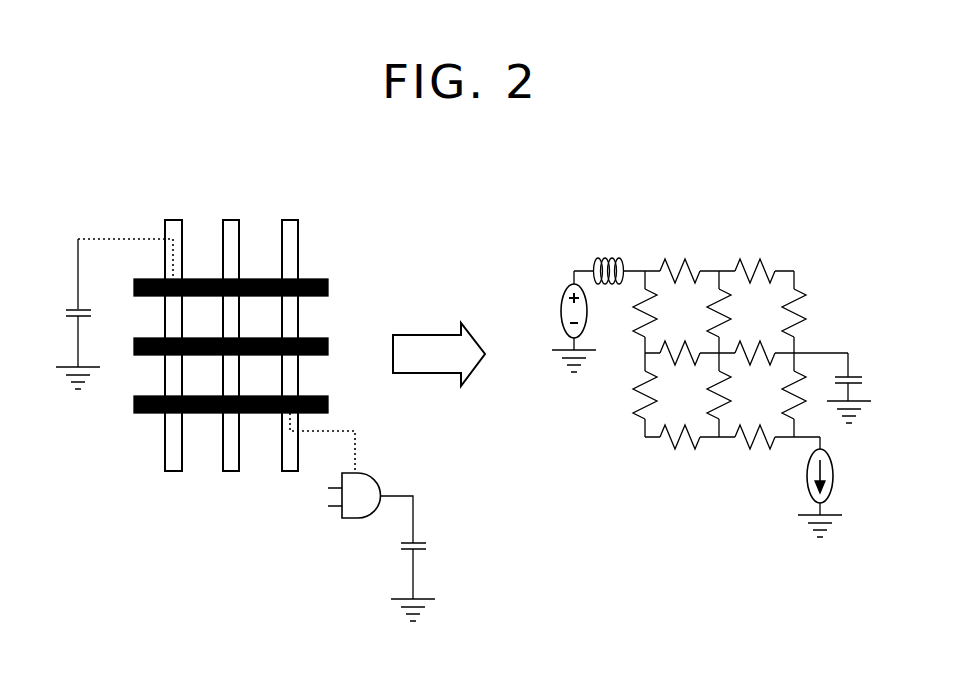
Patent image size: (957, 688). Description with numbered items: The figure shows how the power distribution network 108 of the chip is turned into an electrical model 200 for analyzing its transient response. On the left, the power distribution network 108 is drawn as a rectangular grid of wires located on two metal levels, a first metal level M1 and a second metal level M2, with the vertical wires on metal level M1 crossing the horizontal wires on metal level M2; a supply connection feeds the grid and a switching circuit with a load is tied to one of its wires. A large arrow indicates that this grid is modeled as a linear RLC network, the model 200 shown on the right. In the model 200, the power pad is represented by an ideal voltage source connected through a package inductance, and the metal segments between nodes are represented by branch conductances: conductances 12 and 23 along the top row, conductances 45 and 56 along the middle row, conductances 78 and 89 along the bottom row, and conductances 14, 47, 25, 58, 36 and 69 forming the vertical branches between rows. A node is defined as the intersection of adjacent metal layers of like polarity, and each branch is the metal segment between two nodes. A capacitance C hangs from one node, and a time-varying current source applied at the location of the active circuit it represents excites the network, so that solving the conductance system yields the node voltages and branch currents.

The power distribution network 108 is at (253, 156).
The model 200 is at (742, 240).
The metal level M1 is at (231, 329).
The metal level M2 is at (253, 342).
The conductance g12 12 is at (680, 257).
The conductance g23 23 is at (758, 257).
The conductance g14 14 is at (633, 313).
The conductance g25 25 is at (707, 313).
The conductance g36 36 is at (781, 313).
The conductance g45 45 is at (681, 364).
The conductance g56 56 is at (756, 364).
The conductance g47 47 is at (632, 395).
The conductance g58 58 is at (706, 395).
The conductance g69 69 is at (781, 395).
The conductance g78 78 is at (681, 448).
The conductance g89 89 is at (756, 448).
The decoupling capacitor C is at (856, 388).